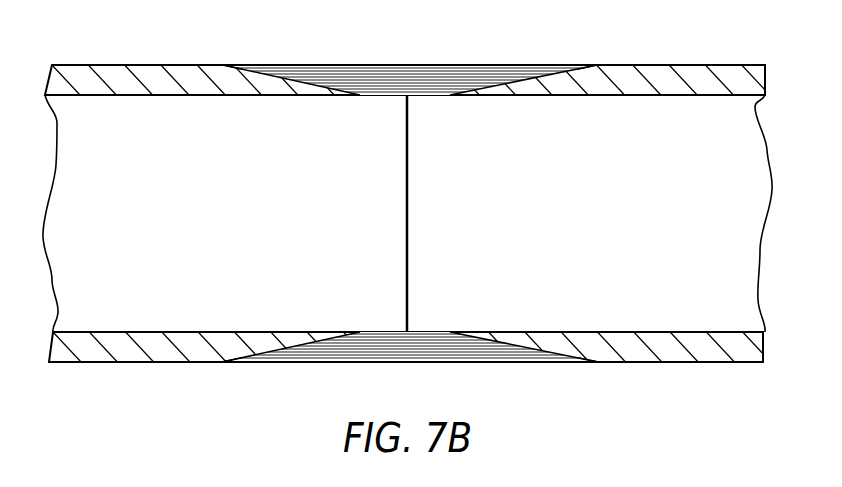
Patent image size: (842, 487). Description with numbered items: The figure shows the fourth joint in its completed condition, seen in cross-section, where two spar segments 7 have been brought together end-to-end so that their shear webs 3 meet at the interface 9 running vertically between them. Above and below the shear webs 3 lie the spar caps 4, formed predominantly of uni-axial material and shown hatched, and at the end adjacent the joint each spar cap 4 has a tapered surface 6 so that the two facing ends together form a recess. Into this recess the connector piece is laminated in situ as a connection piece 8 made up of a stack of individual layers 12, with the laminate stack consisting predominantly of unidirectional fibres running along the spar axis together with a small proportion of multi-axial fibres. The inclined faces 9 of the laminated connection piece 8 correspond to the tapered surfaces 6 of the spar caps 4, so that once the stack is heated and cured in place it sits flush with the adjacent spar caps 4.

The shear web 3 is at (227, 302).
The spar cap 4 is at (133, 77).
The tapered surface 6 is at (302, 83).
The spar segment 7 is at (181, 222).
The connection piece 8 is at (450, 73).
The interface 9 is at (409, 210).
The layer 12 is at (407, 64).